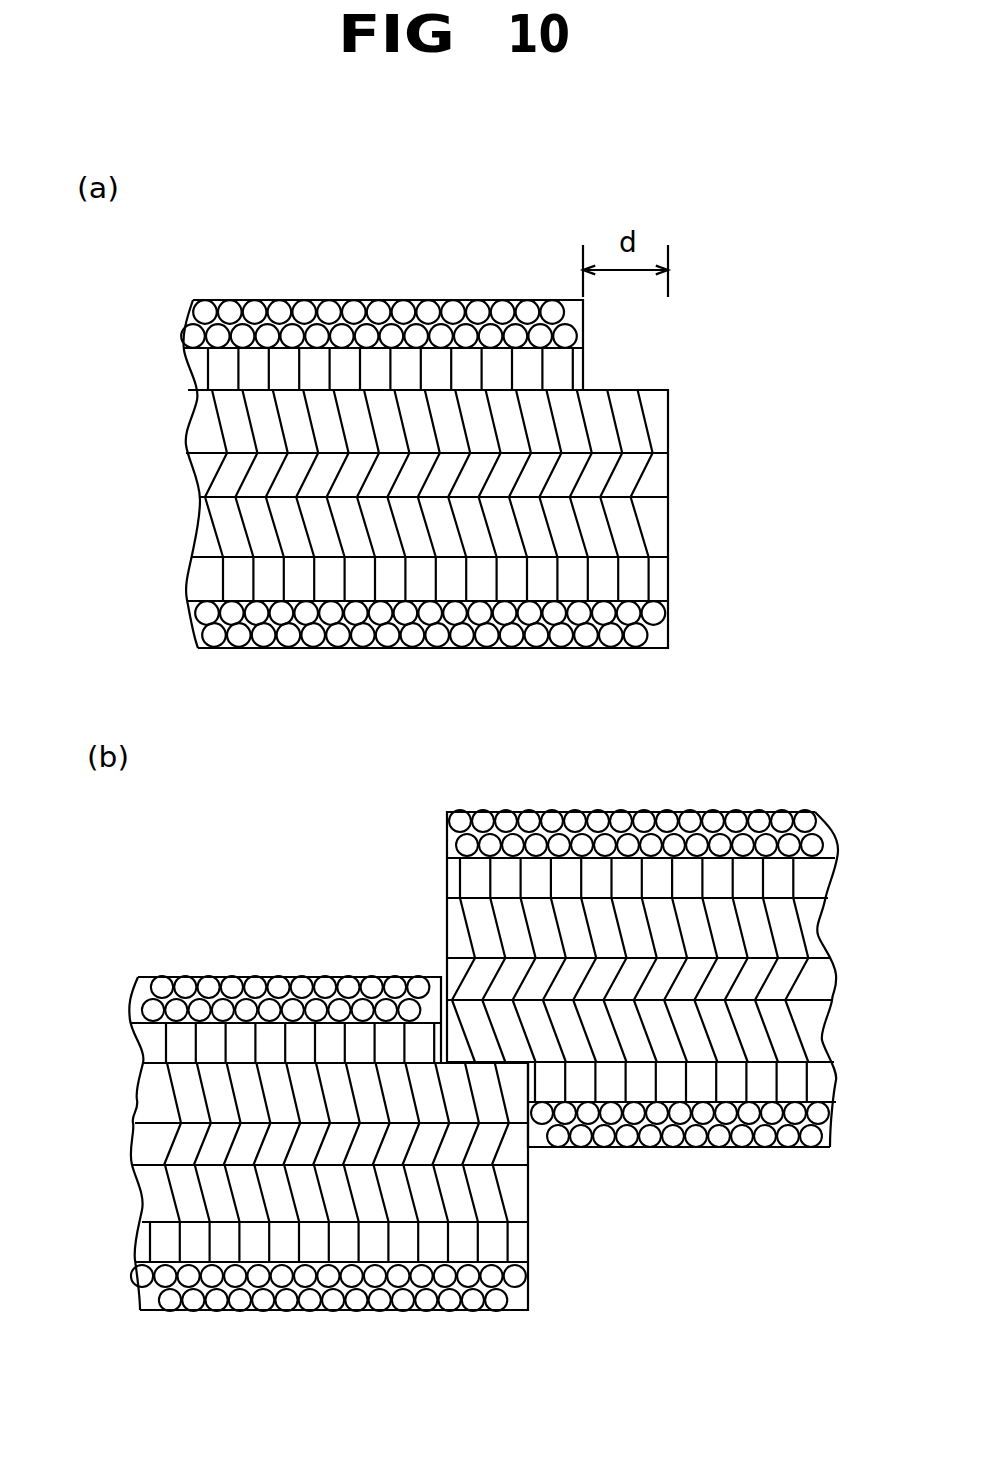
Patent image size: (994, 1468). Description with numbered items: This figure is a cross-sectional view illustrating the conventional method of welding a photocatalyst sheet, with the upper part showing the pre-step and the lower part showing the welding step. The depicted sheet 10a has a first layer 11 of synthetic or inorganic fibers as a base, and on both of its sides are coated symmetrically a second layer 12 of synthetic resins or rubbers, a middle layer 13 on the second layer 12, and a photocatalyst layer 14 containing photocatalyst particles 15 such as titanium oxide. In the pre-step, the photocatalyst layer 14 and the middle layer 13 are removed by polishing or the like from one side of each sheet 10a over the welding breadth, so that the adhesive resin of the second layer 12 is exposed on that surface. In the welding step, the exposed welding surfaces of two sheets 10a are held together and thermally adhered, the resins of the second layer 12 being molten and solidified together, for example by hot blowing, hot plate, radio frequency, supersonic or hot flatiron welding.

The sheet 10a is at (386, 258).
The first layer 11 is at (190, 475).
The second layer 12 is at (190, 420).
The middle layer 13 is at (190, 378).
The photocatalyst layer 14 is at (185, 335).
The photocatalyst particles 15 is at (254, 300).